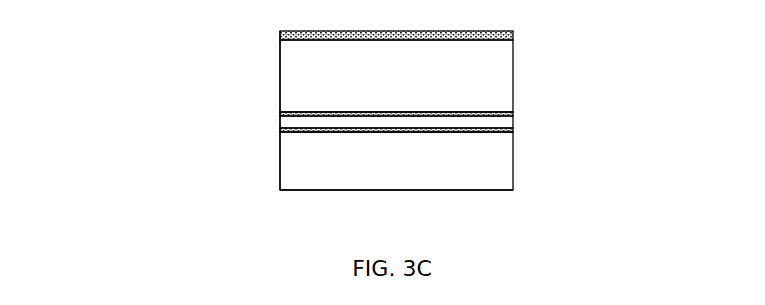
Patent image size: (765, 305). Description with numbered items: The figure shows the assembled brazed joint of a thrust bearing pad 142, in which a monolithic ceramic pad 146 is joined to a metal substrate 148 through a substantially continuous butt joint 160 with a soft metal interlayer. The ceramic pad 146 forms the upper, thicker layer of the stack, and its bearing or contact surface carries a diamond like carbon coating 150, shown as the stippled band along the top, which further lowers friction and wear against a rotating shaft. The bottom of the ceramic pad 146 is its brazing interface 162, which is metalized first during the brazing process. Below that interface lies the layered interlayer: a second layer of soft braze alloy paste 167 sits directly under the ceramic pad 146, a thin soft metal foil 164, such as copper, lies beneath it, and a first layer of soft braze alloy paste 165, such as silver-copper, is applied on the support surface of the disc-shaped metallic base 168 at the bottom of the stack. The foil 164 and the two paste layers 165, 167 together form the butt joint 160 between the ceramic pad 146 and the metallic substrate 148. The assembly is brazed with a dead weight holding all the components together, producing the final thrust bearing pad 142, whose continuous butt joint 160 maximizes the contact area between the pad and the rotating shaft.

The thrust bearing pad 142 is at (213, 103).
The ceramic pad 146 is at (408, 87).
The metal substrate 148 is at (368, 203).
The diamond like carbon coating 150 is at (280, 35).
The butt joint 160 is at (303, 134).
The brazing interface 162 is at (493, 112).
The soft metal foil 164 is at (280, 123).
The first layer of soft braze alloy paste 165 is at (513, 131).
The second layer of soft braze alloy paste 167 is at (513, 113).
The metallic base 168 is at (280, 178).